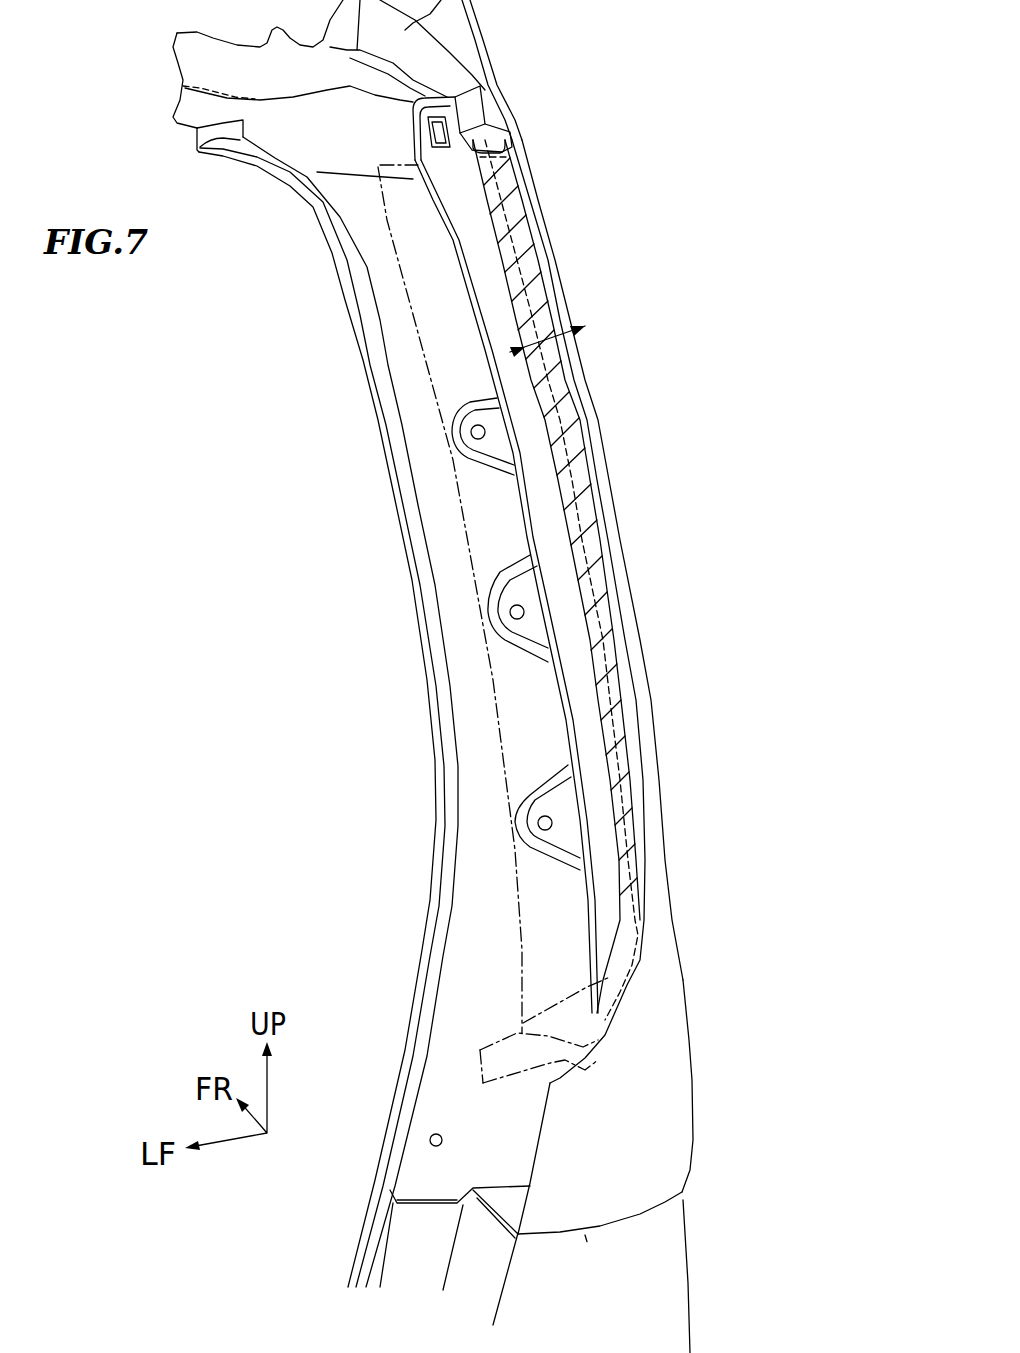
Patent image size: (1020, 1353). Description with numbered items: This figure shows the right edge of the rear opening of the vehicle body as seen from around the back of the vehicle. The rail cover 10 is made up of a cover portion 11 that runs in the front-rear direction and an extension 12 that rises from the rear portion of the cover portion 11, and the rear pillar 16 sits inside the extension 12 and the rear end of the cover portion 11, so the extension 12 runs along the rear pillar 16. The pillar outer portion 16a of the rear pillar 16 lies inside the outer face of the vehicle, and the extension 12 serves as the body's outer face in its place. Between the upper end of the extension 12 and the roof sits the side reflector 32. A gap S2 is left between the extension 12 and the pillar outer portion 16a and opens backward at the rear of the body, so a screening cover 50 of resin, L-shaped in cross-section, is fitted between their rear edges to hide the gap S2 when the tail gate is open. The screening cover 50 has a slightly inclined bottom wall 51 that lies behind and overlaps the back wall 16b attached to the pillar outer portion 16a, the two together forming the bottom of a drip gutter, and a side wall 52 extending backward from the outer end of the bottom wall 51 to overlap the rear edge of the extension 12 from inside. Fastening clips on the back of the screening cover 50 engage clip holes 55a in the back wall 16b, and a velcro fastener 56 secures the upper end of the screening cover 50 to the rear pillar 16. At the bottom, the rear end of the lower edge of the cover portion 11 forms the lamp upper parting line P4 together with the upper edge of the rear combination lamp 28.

The side reflector 32 is at (485, 40).
The velcro fastener 56 is at (443, 133).
The rear pillar 16 is at (552, 580).
The pillar outer portion 16a is at (497, 203).
The back wall 16b is at (463, 322).
The gap S2 is at (585, 326).
The screening cover 50 is at (590, 386).
The clip holes 55a is at (472, 434).
The rail cover 10 is at (625, 732).
The extension 12 is at (637, 550).
The cover portion 11 is at (700, 1126).
The bottom wall 51 is at (547, 953).
The side wall 52 is at (610, 977).
The rear combination lamp 28 is at (687, 1247).
The lamp upper parting line P4 is at (588, 1245).